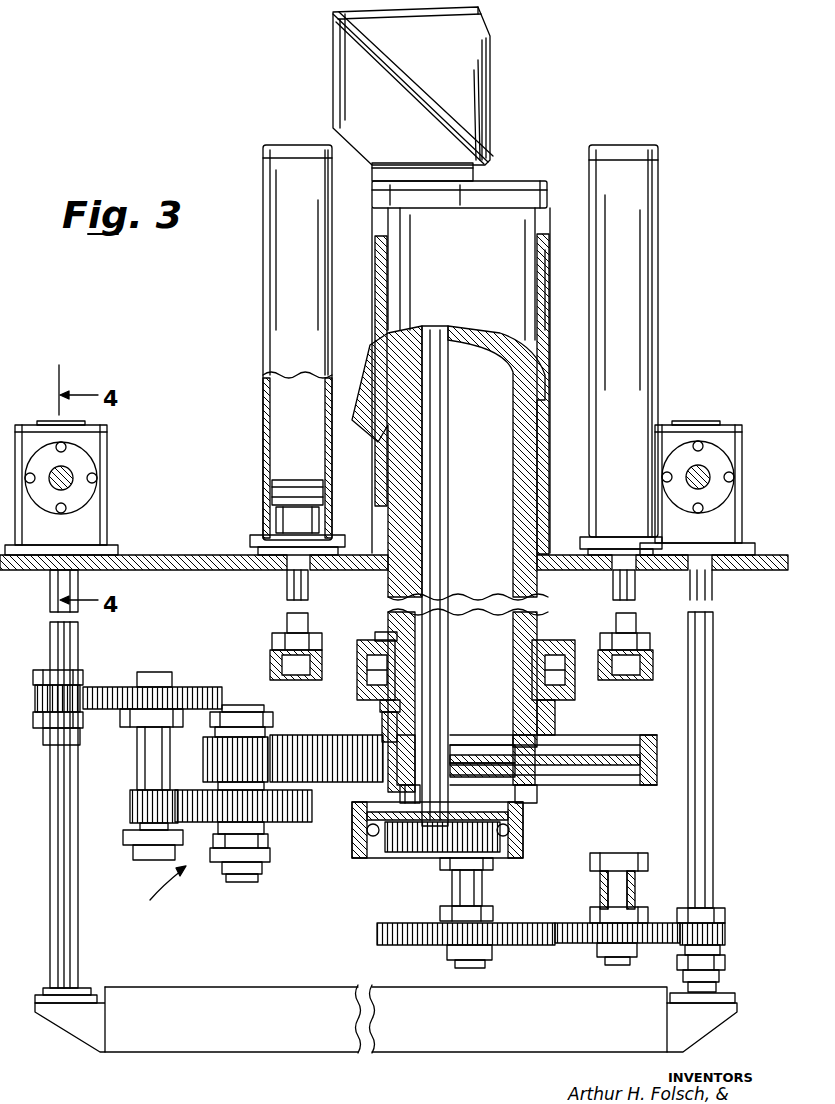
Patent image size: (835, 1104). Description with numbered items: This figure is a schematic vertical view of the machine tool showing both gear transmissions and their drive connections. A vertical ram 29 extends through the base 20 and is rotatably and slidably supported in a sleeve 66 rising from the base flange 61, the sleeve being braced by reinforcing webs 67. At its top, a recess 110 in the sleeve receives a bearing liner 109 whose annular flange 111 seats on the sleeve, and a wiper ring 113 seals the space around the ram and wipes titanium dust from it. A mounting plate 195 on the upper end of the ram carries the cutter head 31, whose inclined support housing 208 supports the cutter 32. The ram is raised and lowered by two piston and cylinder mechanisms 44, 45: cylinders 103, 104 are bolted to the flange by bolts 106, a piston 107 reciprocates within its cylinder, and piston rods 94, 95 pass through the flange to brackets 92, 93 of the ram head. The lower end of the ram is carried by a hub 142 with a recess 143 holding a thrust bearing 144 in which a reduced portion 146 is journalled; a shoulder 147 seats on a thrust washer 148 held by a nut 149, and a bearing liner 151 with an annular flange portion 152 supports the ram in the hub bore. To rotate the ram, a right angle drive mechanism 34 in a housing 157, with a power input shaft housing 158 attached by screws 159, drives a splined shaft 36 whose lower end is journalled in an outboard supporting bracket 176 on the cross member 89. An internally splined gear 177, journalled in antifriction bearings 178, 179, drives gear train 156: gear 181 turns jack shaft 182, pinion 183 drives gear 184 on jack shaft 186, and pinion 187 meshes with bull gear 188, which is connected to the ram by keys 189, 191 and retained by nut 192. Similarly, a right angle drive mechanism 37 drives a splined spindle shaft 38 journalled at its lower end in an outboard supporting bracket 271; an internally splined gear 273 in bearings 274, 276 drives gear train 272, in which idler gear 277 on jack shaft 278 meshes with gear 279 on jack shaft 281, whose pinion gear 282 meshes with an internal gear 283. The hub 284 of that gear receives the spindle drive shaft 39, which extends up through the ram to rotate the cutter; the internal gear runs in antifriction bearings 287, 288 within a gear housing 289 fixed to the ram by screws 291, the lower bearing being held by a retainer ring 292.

The base 20 is at (168, 546).
The ram 29 is at (462, 554).
The cutter head 31 is at (418, 86).
The cutter 32 is at (504, 98).
The right angle drive mechanism 34 is at (81, 488).
The splined shaft 36 is at (60, 830).
The right angle drive mechanism 37 is at (708, 459).
The splined spindle shaft 38 is at (702, 722).
The spindle drive shaft 39 is at (438, 414).
The piston and cylinder mechanism 44 is at (270, 350).
The piston and cylinder mechanism 45 is at (651, 350).
The base flange 61 is at (764, 552).
The sleeve 66 is at (545, 400).
The reinforcing webs 67 is at (358, 374).
The cross member 89 is at (185, 1034).
The bracket 92 is at (268, 664).
The bracket 93 is at (654, 654).
The piston rod 94 is at (288, 583).
The piston rod 95 is at (616, 586).
The cylinder 103 is at (266, 268).
The cylinder 104 is at (630, 268).
The bolts 106 is at (262, 534).
The piston 107 is at (270, 494).
The bearing liner 109 is at (540, 270).
The recess 110 is at (376, 268).
The annular flange 111 is at (549, 238).
The wiper ring 113 is at (463, 373).
The hub 142 is at (351, 649).
The recess 143 is at (366, 690).
The thrust bearing 144 is at (378, 706).
The reduced portion 146 is at (382, 712).
The shoulder 147 is at (386, 642).
The thrust washer 148 is at (569, 646).
The nut 149 is at (576, 652).
The bearing liner 151 is at (548, 713).
The annular flange portion 152 is at (548, 731).
The gear train 156 is at (163, 891).
The housing 157 is at (100, 448).
The power input shaft housing 158 is at (78, 492).
The screws 159 is at (58, 514).
The outboard supporting bracket 176 is at (74, 1026).
The internally splined gear 177 is at (38, 698).
The antifriction bearing 178 is at (80, 668).
The antifriction bearing 179 is at (52, 734).
The gear 181 is at (134, 688).
The jack shaft 182 is at (150, 748).
The pinion 183 is at (146, 801).
The gear 184 is at (290, 818).
The jack shaft 186 is at (243, 814).
The pinion 187 is at (204, 756).
The bull gear 188 is at (303, 734).
The key 189 is at (412, 737).
The key 191 is at (528, 746).
The nut 192 is at (540, 804).
The mounting plate 195 is at (544, 190).
The support housing 208 is at (344, 78).
The outboard supporting bracket 271 is at (725, 1010).
The gear train 272 is at (528, 899).
The internally splined gear 273 is at (727, 929).
The antifriction bearing 274 is at (726, 908).
The antifriction bearing 276 is at (727, 962).
The idler gear 277 is at (590, 946).
The jack shaft 278 is at (618, 870).
The gear 279 is at (434, 944).
The jack shaft 281 is at (484, 881).
The pinion gear 282 is at (464, 864).
The internal gear 283 is at (432, 852).
The hub 284 is at (458, 791).
The antifriction bearing 287 is at (526, 830).
The antifriction bearing 288 is at (438, 849).
The gear housing 289 is at (354, 838).
The screws 291 is at (378, 807).
The retainer ring 292 is at (352, 852).